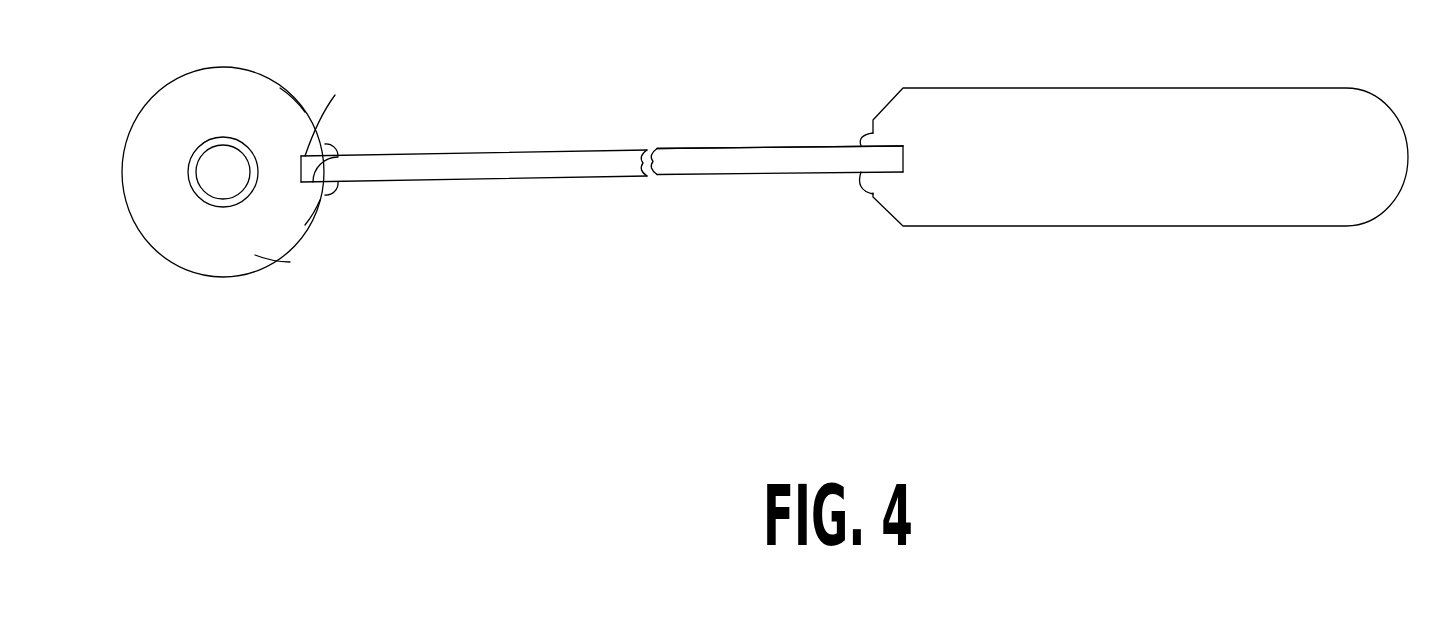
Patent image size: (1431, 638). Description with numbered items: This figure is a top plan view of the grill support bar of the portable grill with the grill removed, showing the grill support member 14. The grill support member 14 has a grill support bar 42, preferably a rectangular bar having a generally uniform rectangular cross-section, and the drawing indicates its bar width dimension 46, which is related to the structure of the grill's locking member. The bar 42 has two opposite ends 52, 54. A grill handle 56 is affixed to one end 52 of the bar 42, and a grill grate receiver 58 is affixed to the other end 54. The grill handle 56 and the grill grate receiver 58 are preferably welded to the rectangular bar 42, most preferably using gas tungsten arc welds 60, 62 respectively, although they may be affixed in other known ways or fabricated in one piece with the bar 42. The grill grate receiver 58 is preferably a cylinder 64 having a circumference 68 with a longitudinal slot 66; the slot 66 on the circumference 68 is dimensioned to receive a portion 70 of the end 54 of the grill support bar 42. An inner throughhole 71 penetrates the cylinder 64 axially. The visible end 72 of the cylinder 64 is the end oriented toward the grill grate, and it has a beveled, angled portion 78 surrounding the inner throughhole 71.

The grill support member 14 is at (703, 133).
The grill support bar 42 is at (800, 176).
The bar width dimension 46 is at (538, 178).
The end of the grill support bar 52 is at (903, 157).
The end of the grill support bar 54 is at (300, 168).
The grill handle 56 is at (1109, 226).
The grill grate receiver 58 is at (275, 261).
The gas tungsten arc weld 60 is at (862, 138).
The gas tungsten arc weld 62 is at (332, 140).
The cylinder 64 is at (294, 98).
The longitudinal slot 66 is at (336, 111).
The circumference 68 is at (318, 213).
The portion of the end of the grill support bar 70 is at (340, 152).
The inner throughhole 71 is at (223, 145).
The end of the cylinder 72 is at (210, 67).
The beveled portion 78 is at (244, 148).